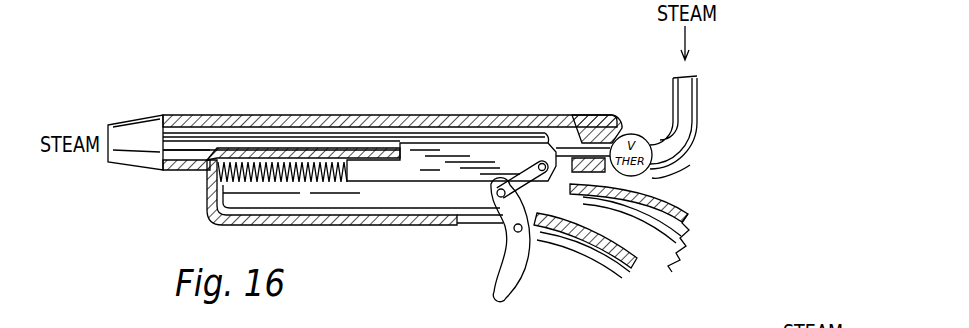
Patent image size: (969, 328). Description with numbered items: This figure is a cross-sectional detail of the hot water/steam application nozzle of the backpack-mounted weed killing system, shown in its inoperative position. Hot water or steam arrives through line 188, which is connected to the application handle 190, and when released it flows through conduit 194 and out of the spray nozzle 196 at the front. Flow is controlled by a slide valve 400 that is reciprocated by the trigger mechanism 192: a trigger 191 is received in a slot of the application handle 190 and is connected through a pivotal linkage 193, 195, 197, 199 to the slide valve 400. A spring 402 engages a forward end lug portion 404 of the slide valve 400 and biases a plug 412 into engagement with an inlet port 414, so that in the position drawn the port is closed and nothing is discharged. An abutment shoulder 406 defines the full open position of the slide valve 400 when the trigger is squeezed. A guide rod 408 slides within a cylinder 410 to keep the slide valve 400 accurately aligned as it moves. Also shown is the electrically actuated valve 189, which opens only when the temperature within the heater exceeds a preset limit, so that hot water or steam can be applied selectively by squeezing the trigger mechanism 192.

The spray nozzle 196 is at (134, 126).
The spring 402 is at (318, 115).
The abutment shoulder 406 is at (372, 115).
The forward end lug portion 404 is at (355, 226).
The conduit 194 is at (428, 117).
The slide valve 400 is at (486, 140).
The pivotal linkage element 197 is at (536, 146).
The pivotal linkage element 199 is at (548, 160).
The pivotal linkage element 195 is at (496, 193).
The trigger mechanism 192 is at (498, 296).
The trigger 191 is at (488, 222).
The plug 412 is at (592, 114).
The inlet port 414 is at (612, 124).
The line 188 is at (692, 104).
The electrically actuated valve 189 is at (680, 165).
The guide rod 408 is at (686, 192).
The application handle 190 is at (694, 226).
The cylinder 410 is at (676, 247).
The pivotal linkage element 193 is at (536, 236).